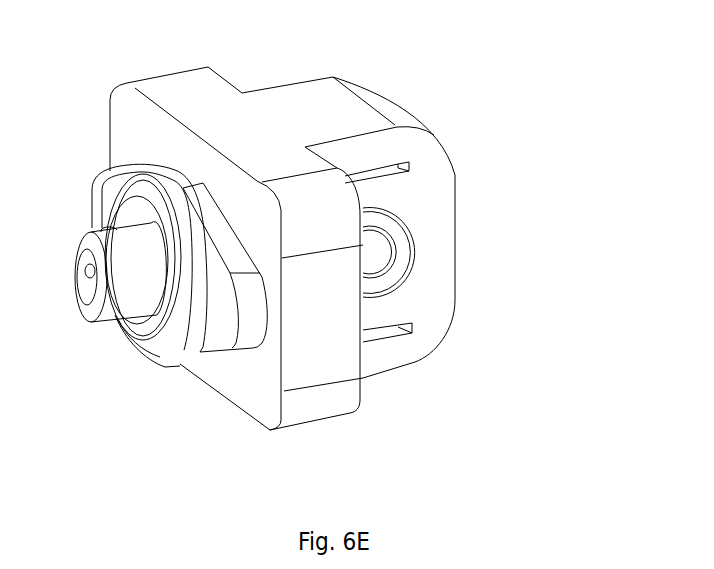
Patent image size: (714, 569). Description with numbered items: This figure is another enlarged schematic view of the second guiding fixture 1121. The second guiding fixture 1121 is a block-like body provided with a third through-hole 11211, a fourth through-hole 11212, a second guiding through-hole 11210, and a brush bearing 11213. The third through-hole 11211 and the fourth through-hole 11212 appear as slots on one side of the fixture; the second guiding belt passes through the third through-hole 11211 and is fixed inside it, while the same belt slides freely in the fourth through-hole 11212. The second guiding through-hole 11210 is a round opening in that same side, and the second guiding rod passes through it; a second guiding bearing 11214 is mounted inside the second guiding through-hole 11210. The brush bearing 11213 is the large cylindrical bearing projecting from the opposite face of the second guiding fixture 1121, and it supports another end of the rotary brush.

The second guiding fixture 1121 is at (222, 98).
The third through-hole 11211 is at (397, 165).
The fourth through-hole 11212 is at (392, 332).
The brush bearing 11213 is at (157, 320).
The second guiding bearing 11214 is at (400, 238).
The second guiding through-hole 11210 is at (378, 253).